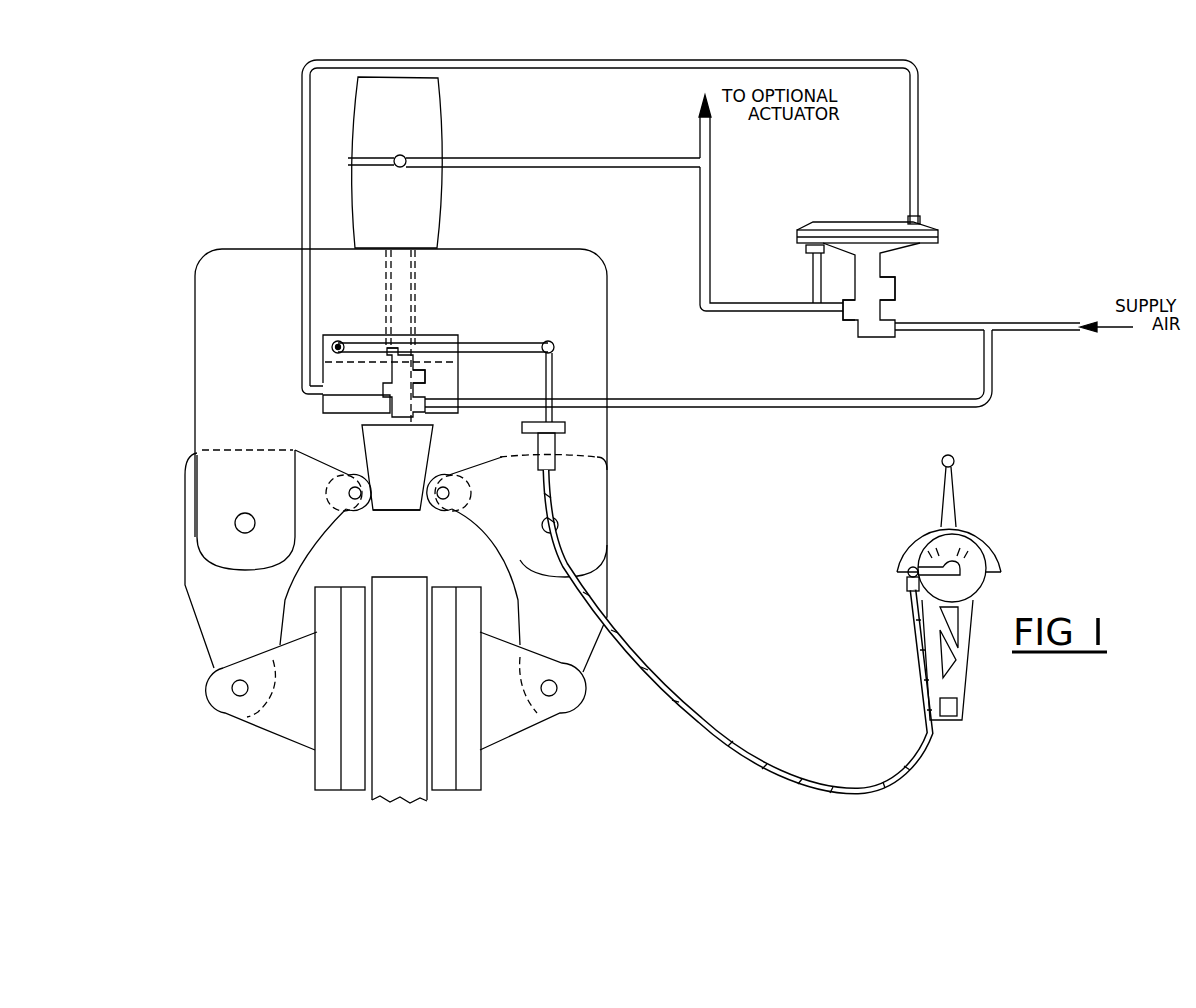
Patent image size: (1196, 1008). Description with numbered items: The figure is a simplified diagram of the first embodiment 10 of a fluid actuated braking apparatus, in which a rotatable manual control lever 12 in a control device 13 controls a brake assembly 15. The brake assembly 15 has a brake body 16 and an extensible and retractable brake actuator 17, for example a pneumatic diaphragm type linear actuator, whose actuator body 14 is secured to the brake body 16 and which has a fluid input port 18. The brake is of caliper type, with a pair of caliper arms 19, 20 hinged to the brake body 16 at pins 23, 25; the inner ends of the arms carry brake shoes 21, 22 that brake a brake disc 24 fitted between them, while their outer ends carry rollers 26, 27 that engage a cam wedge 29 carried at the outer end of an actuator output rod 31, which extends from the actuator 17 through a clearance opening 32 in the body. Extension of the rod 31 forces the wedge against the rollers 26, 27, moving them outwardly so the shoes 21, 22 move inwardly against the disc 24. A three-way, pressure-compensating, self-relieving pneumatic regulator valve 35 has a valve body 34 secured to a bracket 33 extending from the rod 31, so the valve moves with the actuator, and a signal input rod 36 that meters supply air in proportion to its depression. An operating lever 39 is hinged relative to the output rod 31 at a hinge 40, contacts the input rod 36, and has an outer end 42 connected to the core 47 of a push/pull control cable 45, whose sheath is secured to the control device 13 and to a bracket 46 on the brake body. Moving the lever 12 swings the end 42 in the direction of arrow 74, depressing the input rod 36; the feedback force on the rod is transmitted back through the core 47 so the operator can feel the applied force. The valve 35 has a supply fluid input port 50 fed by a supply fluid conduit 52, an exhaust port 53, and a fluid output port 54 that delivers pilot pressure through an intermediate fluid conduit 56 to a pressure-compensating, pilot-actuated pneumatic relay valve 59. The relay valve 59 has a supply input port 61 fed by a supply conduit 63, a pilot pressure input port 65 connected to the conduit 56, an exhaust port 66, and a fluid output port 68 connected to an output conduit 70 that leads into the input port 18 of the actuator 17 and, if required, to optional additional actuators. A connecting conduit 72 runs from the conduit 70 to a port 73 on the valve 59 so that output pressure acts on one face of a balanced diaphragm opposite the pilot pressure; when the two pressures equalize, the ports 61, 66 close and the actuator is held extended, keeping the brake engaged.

The first embodiment of fluid actuated braking apparatus 10 is at (222, 163).
The manual control lever 12 is at (953, 488).
The control device 13 is at (1005, 520).
The actuator body 14 is at (428, 118).
The brake assembly 15 is at (638, 438).
The brake body 16 is at (585, 270).
The brake actuator 17 is at (475, 94).
The fluid input port 18 is at (406, 158).
The caliper arm 19 is at (195, 590).
The caliper arm 20 is at (592, 577).
The brake shoe 21 is at (325, 595).
The brake shoe 22 is at (463, 615).
The pin 23 is at (245, 516).
The brake disc 24 is at (392, 586).
The pin 25 is at (560, 521).
The roller 26 is at (360, 518).
The roller 27 is at (443, 511).
The cam wedge 29 is at (378, 505).
The actuator output rod 31 is at (412, 282).
The clearance opening 32 is at (418, 303).
The bracket 33 is at (428, 335).
The valve body 34 is at (402, 430).
The regulator valve 35 is at (372, 416).
The input rod 36 is at (380, 367).
The operating lever 39 is at (513, 335).
The hinge 40 is at (340, 343).
The outer end of operating lever 42 is at (555, 345).
The push/pull control cable 45 is at (628, 612).
The bracket 46 is at (565, 428).
The cable core 47 is at (552, 375).
The supply fluid input port 50 is at (420, 407).
The supply fluid conduit 52 is at (770, 408).
The exhaust port 53 is at (420, 377).
The fluid output port 54 is at (380, 393).
The intermediate fluid conduit 56 is at (920, 128).
The relay valve 59 is at (955, 220).
The supply fluid input port 61 is at (890, 337).
The supply conduit 63 is at (940, 323).
The pilot pressure input port 65 is at (920, 216).
The exhaust port 66 is at (896, 286).
The fluid output port 68 is at (842, 318).
The output conduit 70 is at (536, 170).
The connecting conduit 72 is at (812, 278).
The port 73 is at (805, 249).
The arrow 74 is at (682, 378).